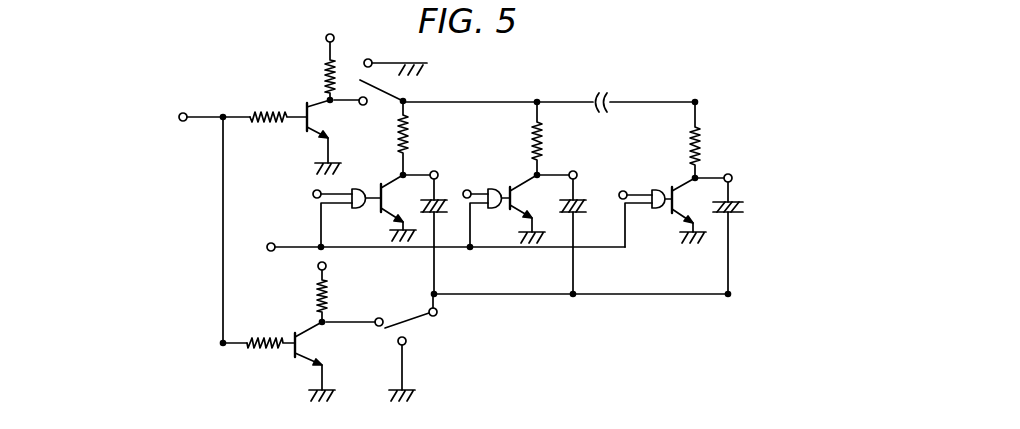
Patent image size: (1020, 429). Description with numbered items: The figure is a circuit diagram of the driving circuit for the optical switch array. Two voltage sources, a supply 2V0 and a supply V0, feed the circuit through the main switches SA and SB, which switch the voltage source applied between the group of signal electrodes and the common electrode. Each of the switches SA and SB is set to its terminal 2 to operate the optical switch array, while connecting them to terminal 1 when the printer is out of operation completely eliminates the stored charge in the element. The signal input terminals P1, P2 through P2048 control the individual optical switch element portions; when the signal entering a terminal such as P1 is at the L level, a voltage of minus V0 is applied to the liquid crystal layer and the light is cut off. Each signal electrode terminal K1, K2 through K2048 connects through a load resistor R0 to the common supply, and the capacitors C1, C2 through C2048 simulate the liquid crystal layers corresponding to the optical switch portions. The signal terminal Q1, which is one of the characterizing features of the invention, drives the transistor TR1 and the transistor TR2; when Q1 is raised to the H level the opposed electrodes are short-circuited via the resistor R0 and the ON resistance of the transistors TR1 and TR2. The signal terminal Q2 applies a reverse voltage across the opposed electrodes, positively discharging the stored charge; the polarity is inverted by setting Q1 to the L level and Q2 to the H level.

The signal terminal Q1 is at (202, 121).
The signal terminal Q2 is at (443, 237).
The transistor TR1 is at (295, 129).
The transistor TR2 is at (291, 358).
The supply voltage 2V0 is at (314, 66).
The supply voltage V0 is at (334, 292).
The main switch SA is at (368, 104).
The main switch SB is at (389, 319).
The terminal 1 is at (395, 220).
The terminal 2 is at (370, 211).
The resistor R0 is at (560, 140).
The signal electrode terminal K1 is at (424, 165).
The signal electrode terminal K2 is at (561, 166).
The signal electrode terminal K2048 is at (732, 170).
The capacitor C1 is at (440, 236).
The capacitor C2 is at (579, 236).
The capacitor C2048 is at (747, 238).
The signal input terminal P1 is at (334, 216).
The signal input terminal P2 is at (485, 206).
The signal input terminal P2048 is at (639, 210).